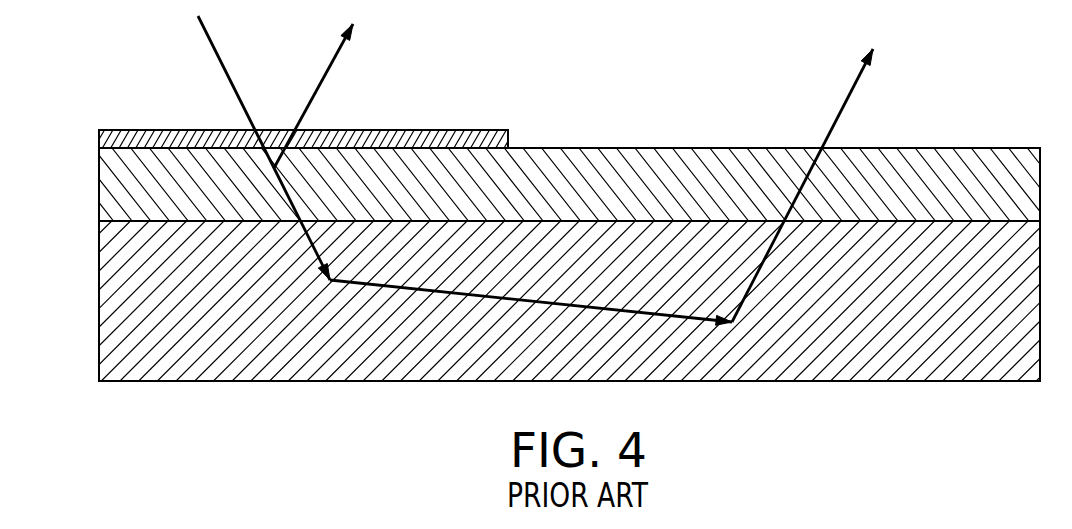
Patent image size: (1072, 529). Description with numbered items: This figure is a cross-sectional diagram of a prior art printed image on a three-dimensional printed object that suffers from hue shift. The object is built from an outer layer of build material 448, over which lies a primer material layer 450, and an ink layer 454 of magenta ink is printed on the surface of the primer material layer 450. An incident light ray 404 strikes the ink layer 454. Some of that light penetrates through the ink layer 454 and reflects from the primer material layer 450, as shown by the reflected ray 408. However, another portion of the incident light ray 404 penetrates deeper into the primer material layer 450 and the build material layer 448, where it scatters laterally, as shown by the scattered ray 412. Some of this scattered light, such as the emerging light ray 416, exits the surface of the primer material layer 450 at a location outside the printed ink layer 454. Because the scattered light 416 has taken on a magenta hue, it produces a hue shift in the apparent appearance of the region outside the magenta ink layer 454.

The incident light ray 404 is at (230, 83).
The reflected light ray 408 is at (317, 93).
The laterally scattered light ray 412 is at (470, 295).
The emerging scattered light ray 416 is at (766, 258).
The build material layer 448 is at (99, 293).
The primer material layer 450 is at (99, 185).
The ink layer 454 is at (99, 140).